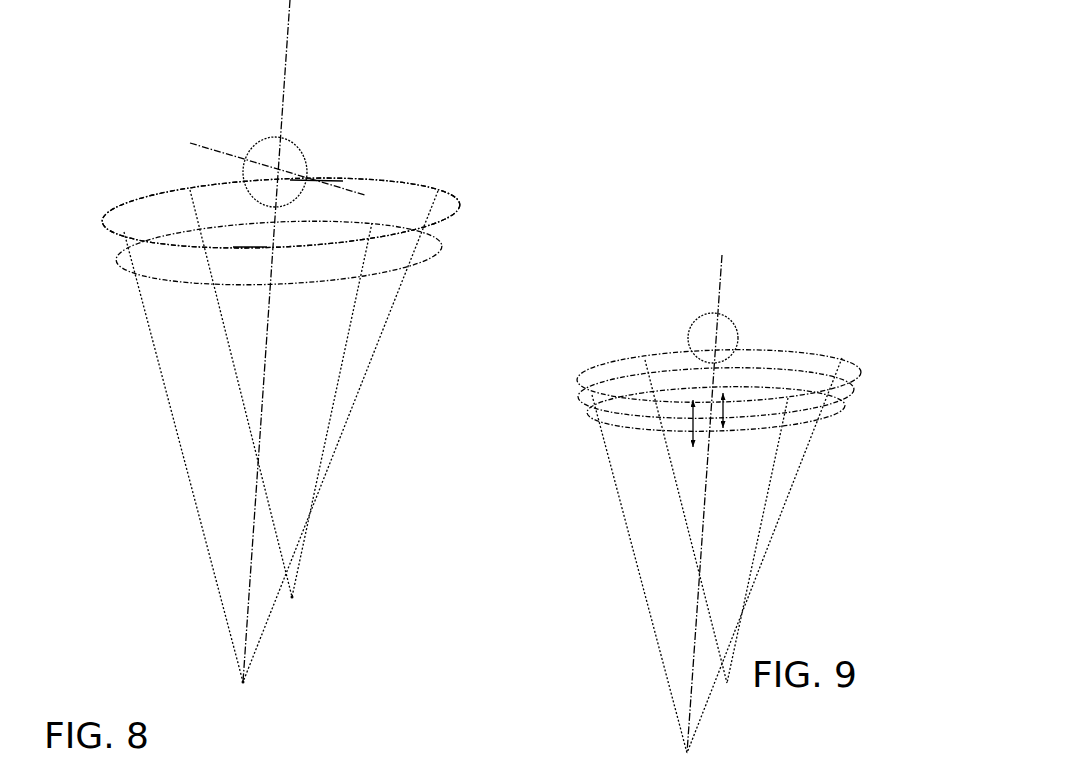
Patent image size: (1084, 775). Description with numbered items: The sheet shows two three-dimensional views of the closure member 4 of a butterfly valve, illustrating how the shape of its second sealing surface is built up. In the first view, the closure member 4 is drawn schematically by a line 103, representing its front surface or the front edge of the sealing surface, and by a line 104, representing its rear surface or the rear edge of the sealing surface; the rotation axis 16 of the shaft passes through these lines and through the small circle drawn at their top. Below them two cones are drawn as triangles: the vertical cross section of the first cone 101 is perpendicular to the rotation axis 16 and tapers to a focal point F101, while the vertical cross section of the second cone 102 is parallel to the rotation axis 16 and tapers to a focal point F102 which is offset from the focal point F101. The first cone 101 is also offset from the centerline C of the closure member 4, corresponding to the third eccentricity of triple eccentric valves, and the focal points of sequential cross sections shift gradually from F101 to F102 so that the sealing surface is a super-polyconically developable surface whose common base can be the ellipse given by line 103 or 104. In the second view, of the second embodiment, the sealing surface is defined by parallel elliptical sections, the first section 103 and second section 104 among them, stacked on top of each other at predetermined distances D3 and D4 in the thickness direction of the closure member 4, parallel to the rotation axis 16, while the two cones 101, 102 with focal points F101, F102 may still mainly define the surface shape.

In FIG. 8, the rotation axis 16 is at (205, 132).
In FIG. 8, the closure member 4 is at (75, 231).
In FIG. 8, the line representing front surface of the closure member 103 is at (94, 263).
In FIG. 8, the line representing rear surface of the closure member 104 is at (480, 210).
In FIG. 8, the first cone 101 is at (169, 473).
In FIG. 8, the second cone 102 is at (370, 322).
In FIG. 8, the focal point of the first cone F101 is at (218, 673).
In FIG. 8, the focal point of the second cone F102 is at (311, 596).
In FIG. 8, the centerline of the closure member C is at (301, 774).
In FIG. 9, the predetermined distance D3 is at (690, 416).
In FIG. 9, the predetermined distance D4 is at (727, 410).